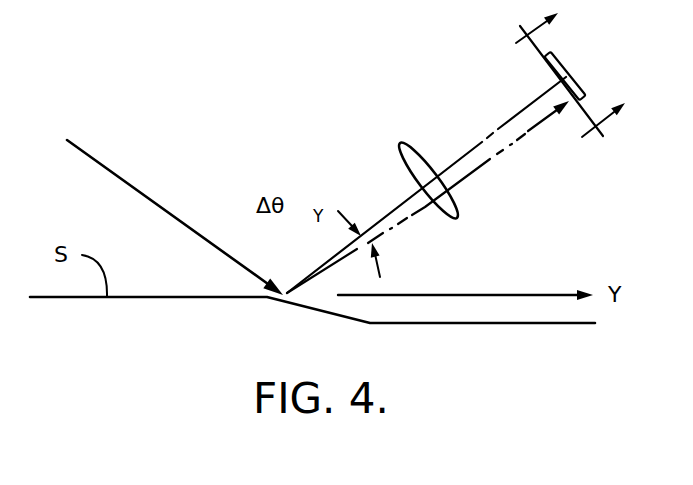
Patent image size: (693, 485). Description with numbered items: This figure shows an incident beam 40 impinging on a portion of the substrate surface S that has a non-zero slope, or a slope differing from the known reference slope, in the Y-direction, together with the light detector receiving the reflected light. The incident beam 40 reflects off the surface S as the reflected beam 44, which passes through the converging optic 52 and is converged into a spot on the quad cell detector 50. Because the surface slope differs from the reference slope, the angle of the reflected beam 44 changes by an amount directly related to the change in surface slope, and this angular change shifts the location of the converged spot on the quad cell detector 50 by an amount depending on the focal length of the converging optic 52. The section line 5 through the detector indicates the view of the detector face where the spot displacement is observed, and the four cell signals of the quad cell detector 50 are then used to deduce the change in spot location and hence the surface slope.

The incident beam 40 is at (142, 193).
The reflected beam 44 is at (408, 218).
The quad cell detector 50 is at (576, 72).
The converging optic 52 is at (451, 206).
The section line 5- 5 is at (554, 88).